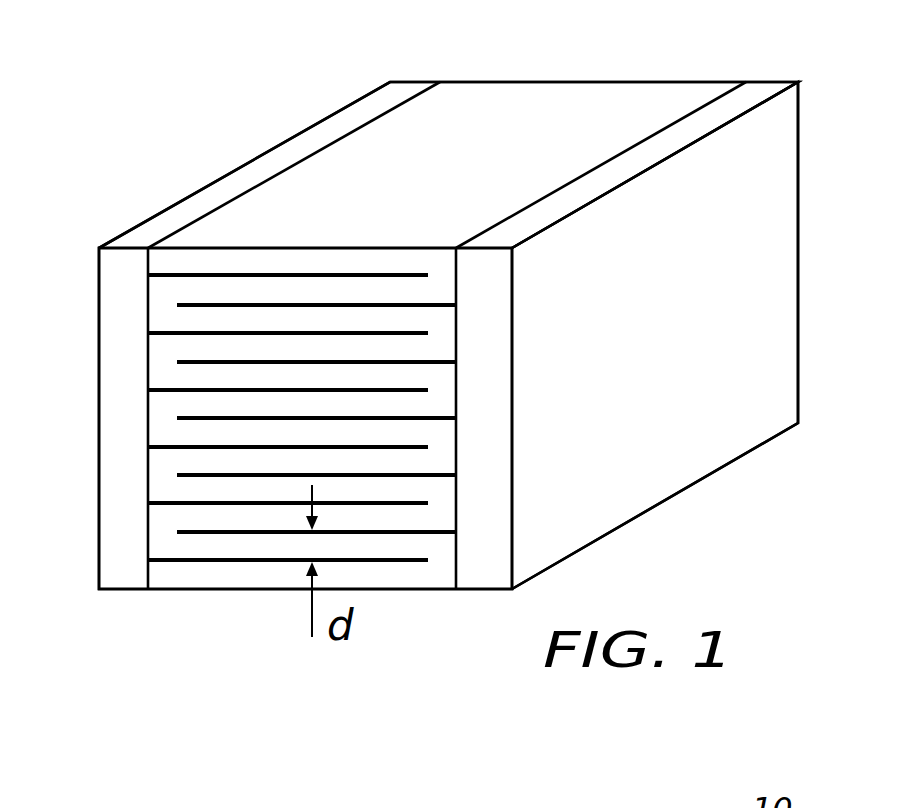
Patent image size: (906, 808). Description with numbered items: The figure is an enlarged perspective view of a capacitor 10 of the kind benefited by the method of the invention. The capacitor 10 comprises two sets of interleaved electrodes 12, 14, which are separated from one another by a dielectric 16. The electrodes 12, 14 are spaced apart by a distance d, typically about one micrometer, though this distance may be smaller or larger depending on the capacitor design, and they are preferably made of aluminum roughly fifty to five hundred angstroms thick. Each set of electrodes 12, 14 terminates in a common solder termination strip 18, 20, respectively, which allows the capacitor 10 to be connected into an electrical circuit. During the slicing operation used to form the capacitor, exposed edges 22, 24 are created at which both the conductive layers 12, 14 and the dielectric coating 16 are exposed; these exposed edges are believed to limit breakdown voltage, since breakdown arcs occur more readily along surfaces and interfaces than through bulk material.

The capacitor 10 is at (200, 113).
The first set of electrodes 12 is at (118, 527).
The second set of electrodes 14 is at (487, 542).
The dielectric 16 is at (442, 278).
The solder termination strip 18 is at (145, 225).
The solder termination strip 20 is at (665, 458).
The exposed edge 22 is at (310, 293).
The exposed edge 24 is at (553, 82).